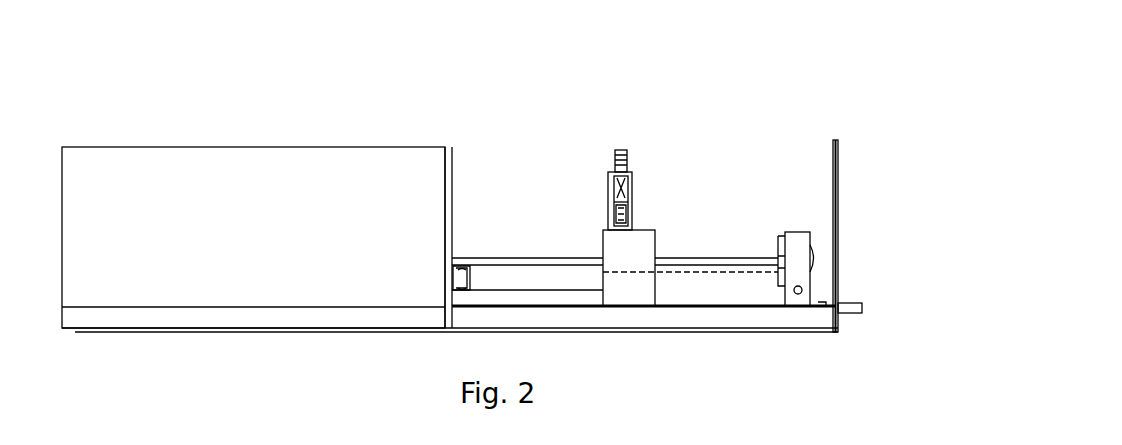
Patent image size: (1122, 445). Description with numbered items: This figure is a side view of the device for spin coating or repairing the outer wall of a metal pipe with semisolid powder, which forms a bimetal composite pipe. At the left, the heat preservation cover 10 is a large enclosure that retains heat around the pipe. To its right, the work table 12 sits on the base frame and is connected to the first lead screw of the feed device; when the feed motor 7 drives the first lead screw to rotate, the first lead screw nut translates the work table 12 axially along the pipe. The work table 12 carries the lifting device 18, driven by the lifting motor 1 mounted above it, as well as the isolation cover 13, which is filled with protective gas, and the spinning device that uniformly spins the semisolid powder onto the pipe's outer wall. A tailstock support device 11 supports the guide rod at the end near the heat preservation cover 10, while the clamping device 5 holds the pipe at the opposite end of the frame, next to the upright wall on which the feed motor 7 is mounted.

The lifting motor 1 is at (656, 110).
The clamping device 5 is at (810, 180).
The feed motor 7 is at (875, 184).
The heat preservation cover 10 is at (253, 192).
The tailstock support device 11 is at (341, 171).
The work table 12 is at (531, 171).
The isolation cover 13 is at (524, 178).
The lifting device 18 is at (554, 140).